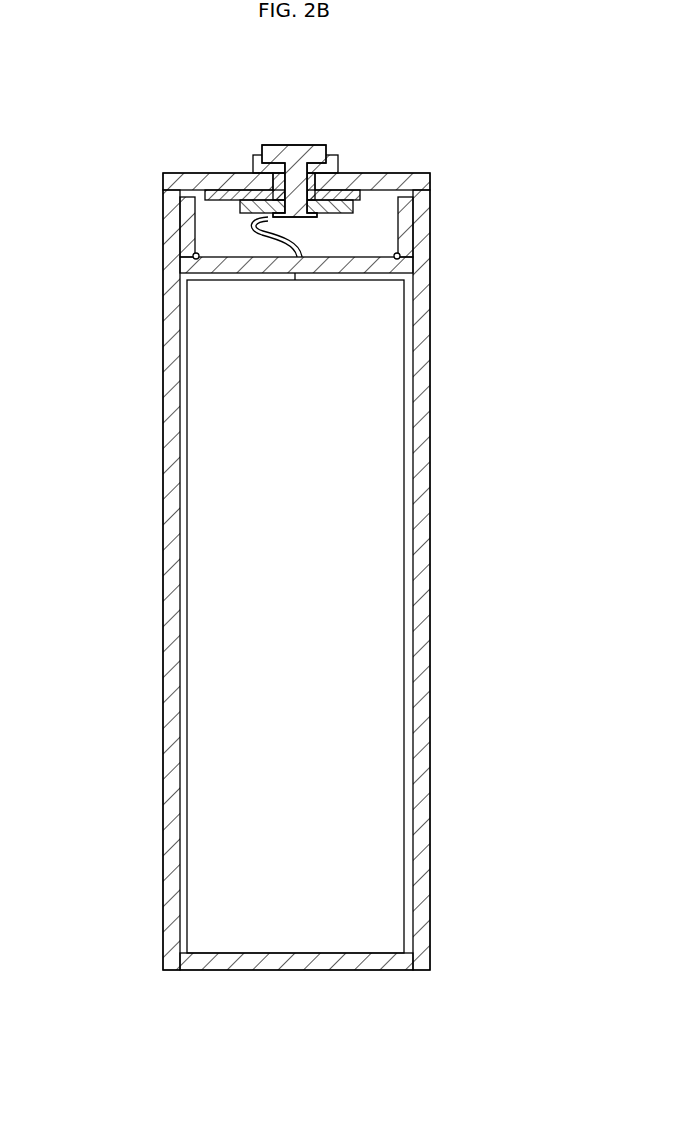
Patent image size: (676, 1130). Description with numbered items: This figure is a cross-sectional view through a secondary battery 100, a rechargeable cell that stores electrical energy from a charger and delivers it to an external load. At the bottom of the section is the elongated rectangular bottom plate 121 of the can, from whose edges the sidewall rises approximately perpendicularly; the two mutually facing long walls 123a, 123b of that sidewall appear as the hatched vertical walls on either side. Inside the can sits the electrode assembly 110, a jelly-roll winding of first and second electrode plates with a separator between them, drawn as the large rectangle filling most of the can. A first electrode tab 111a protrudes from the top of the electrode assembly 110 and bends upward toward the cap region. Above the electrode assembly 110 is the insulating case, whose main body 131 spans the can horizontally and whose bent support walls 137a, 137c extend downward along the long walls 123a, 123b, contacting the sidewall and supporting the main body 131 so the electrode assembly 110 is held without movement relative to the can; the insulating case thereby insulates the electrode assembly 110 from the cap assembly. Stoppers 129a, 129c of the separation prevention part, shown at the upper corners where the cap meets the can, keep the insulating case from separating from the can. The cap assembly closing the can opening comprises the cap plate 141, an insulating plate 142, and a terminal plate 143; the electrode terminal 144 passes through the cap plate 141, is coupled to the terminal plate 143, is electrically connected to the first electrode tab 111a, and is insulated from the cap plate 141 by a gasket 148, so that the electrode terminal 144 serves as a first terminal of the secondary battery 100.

The secondary battery 100 is at (95, 92).
The electrode assembly 110 is at (212, 723).
The first electrode tab 111a is at (247, 218).
The bottom plate 121 is at (308, 962).
The long wall 123a is at (172, 490).
The long wall 123b is at (423, 490).
The stopper 129a is at (413, 175).
The stopper 129c is at (183, 175).
The main body 131 is at (222, 267).
The bent support wall 137a is at (405, 233).
The bent support wall 137c is at (188, 207).
The cap plate 141 is at (274, 153).
The insulating plate 142 is at (368, 197).
The terminal plate 143 is at (358, 190).
The electrode terminal 144 is at (292, 152).
The gasket 148 is at (260, 157).